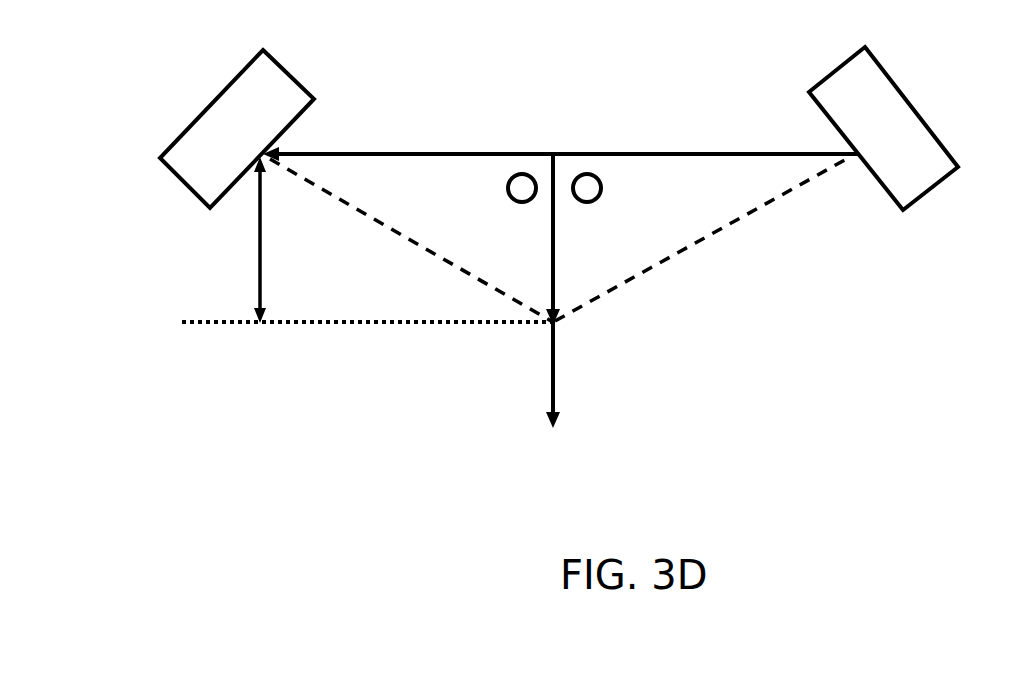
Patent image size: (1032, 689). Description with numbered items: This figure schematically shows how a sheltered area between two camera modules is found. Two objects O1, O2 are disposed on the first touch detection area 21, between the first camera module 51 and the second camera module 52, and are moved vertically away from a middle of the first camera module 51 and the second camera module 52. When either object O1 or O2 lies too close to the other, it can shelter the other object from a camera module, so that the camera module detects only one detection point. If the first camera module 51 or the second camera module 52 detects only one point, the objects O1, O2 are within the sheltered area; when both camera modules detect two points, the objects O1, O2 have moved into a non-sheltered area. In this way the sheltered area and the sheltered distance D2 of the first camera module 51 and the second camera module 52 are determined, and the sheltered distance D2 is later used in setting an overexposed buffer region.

The second camera module 52 is at (217, 115).
The first camera module 51 is at (892, 88).
The first touch detection area 21 is at (401, 166).
The object O2 is at (522, 173).
The object O1 is at (587, 173).
The sheltered distance D2 is at (367, 240).